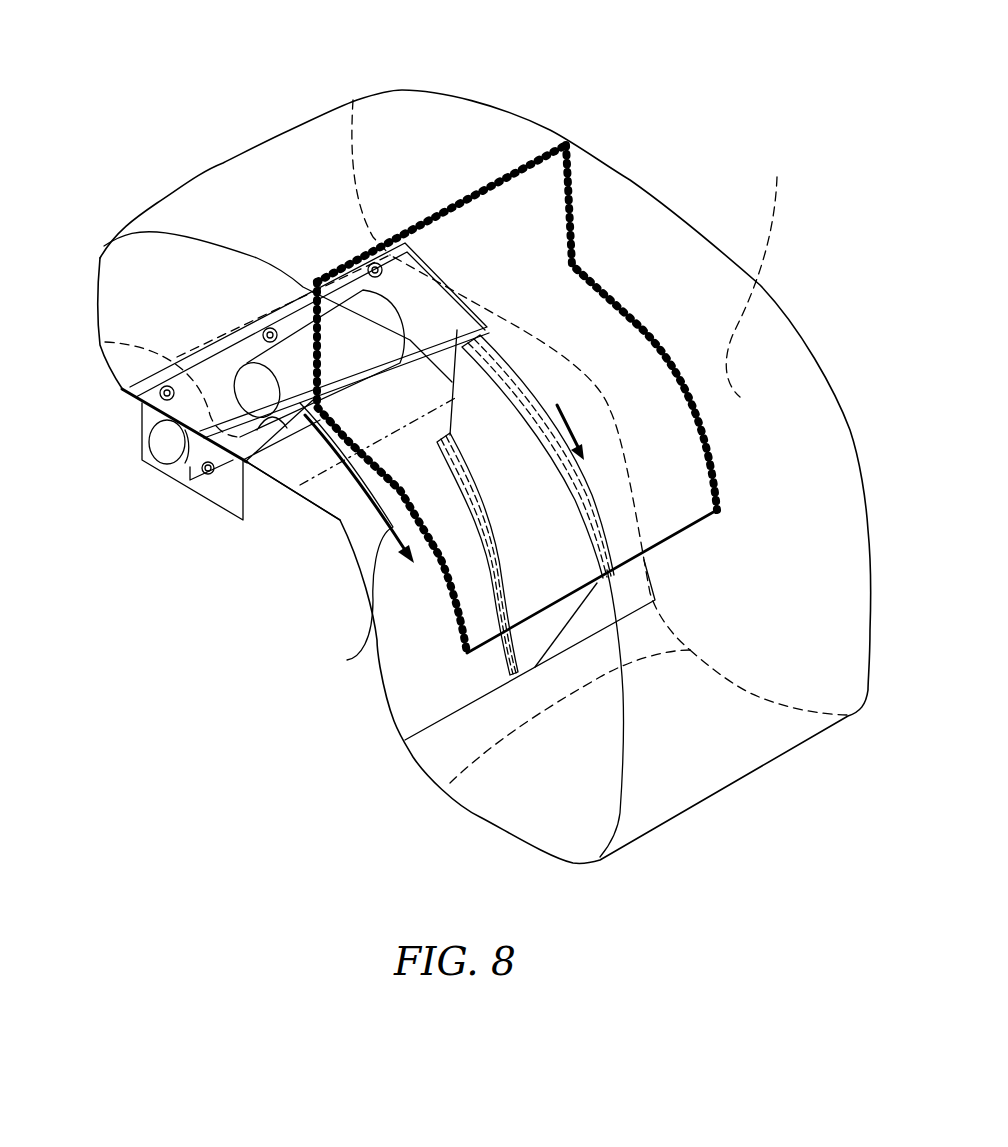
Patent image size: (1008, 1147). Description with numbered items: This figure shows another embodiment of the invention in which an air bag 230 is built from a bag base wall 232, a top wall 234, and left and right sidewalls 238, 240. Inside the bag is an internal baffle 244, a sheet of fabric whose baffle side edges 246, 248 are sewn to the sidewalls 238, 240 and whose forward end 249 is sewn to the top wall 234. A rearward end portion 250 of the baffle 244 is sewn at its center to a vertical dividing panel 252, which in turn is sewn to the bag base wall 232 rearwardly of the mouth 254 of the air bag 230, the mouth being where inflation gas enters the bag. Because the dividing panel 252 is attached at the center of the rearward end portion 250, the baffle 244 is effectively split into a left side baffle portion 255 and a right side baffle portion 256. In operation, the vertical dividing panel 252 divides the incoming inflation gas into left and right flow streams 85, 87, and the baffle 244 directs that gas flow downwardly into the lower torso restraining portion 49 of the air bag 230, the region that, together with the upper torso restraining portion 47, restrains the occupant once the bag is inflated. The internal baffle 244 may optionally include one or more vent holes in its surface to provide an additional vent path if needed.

The upper torso restraining portion 47 is at (770, 363).
The lower torso restraining portion 49 is at (487, 780).
The air bag 230 is at (421, 178).
The bag base wall 232 is at (340, 497).
The top wall 234 is at (385, 225).
The left sidewall 238 is at (230, 288).
The right sidewall 240 is at (762, 273).
The internal baffle 244 is at (567, 323).
The baffle side edge 246 is at (393, 477).
The baffle side edge 248 is at (597, 338).
The forward end 249 is at (507, 217).
The rearward end portion 250 is at (677, 560).
The vertical dividing panel 252 is at (547, 622).
The mouth 254 is at (105, 342).
The left side baffle portion 255 is at (463, 573).
The right side baffle portion 256 is at (677, 477).
The left flow stream 85 is at (357, 539).
The right flow stream 87 is at (560, 400).